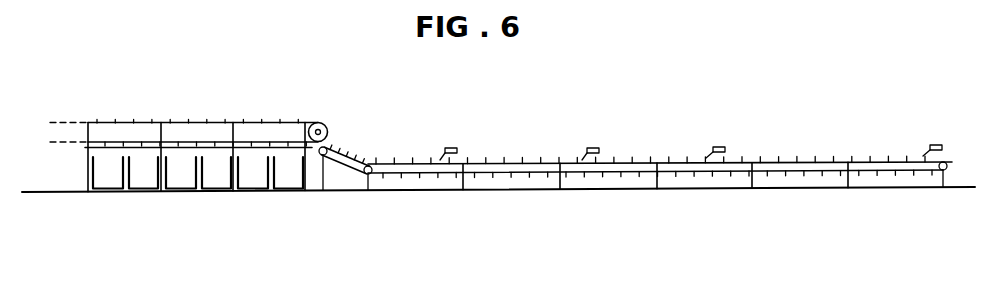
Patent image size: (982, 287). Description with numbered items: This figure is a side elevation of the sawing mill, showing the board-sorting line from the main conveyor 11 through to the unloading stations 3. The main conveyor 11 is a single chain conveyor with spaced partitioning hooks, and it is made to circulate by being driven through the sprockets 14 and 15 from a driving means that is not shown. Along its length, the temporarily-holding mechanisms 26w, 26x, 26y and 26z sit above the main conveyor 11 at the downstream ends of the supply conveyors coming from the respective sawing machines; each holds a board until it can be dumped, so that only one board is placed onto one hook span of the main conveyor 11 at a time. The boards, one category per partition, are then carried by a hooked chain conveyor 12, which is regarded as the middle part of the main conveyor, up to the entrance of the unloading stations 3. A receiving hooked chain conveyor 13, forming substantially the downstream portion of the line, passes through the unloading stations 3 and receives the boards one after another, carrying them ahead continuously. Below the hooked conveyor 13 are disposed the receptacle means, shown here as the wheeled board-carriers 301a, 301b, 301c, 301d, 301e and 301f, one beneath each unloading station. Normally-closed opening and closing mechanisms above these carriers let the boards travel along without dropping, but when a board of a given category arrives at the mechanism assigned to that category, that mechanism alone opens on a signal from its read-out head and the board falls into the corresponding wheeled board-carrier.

The unloading stations 3 is at (298, 95).
The main conveyor 11 is at (708, 172).
The hooked chain conveyor 12 is at (342, 153).
The hooked chain conveyor 13 is at (210, 121).
The sprocket 14 is at (938, 188).
The sprocket 15 is at (363, 175).
The temporarily-holding mechanism 26w is at (935, 144).
The temporarily-holding mechanism 26x is at (718, 146).
The temporarily-holding mechanism 26y is at (593, 147).
The temporarily-holding mechanism 26z is at (450, 147).
The wheeled board-carrier 301a is at (283, 182).
The wheeled board-carrier 301b is at (253, 185).
The wheeled board-carrier 301c is at (217, 182).
The wheeled board-carrier 301d is at (180, 182).
The wheeled board-carrier 301e is at (142, 186).
The wheeled board-carrier 301f is at (108, 182).